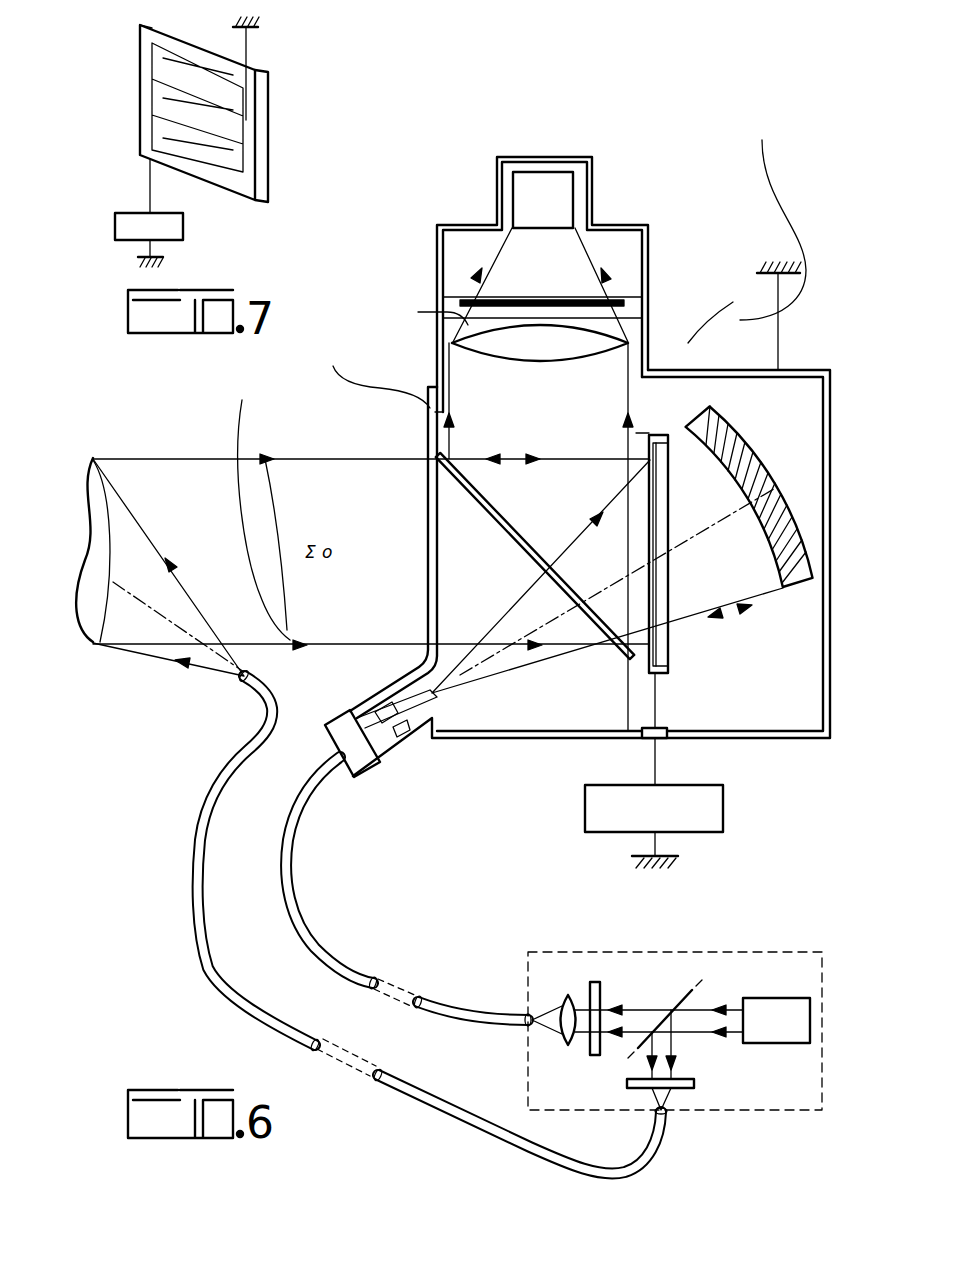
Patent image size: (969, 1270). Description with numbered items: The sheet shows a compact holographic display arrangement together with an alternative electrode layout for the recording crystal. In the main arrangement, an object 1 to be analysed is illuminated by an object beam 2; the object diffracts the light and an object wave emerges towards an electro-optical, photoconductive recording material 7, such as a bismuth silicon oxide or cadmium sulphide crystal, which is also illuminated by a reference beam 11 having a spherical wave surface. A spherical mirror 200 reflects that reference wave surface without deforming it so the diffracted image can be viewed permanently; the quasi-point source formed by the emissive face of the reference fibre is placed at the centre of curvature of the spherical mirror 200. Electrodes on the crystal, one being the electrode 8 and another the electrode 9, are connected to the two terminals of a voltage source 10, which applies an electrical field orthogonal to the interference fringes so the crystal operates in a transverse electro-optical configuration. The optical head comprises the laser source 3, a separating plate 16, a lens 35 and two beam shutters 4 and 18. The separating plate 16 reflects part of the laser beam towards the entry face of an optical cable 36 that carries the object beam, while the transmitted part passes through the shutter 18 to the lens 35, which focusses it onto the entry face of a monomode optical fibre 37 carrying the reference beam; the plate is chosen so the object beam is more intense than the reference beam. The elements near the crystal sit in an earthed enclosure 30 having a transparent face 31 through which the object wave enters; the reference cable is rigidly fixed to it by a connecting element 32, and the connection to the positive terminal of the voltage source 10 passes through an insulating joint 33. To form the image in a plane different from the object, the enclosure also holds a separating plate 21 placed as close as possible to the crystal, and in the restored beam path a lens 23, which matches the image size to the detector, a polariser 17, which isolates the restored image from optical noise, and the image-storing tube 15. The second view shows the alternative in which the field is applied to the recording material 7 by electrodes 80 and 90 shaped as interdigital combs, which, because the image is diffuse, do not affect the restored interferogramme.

In FIG. 6, the object 1 is at (93, 458).
In FIG. 6, the object beam 2 is at (142, 657).
In FIG. 6, the laser source 3 is at (765, 1005).
In FIG. 6, the beam shutter 4 is at (682, 1090).
In FIG. 7, the recording material 7 is at (250, 163).
In FIG. 6, the recording material 7 is at (667, 662).
In FIG. 6, the electrode 8 is at (563, 867).
In FIG. 6, the electrode 9 is at (663, 433).
In FIG. 7, the voltage source 10 is at (184, 229).
In FIG. 6, the voltage source 10 is at (698, 820).
In FIG. 6, the reference beam 11 is at (515, 680).
In FIG. 6, the image-storing tube 15 is at (555, 200).
In FIG. 6, the separating plate 16 is at (673, 1008).
In FIG. 6, the polariser 17 is at (636, 296).
In FIG. 6, the beam shutter 18 is at (608, 936).
In FIG. 6, the separating plate 21 is at (436, 447).
In FIG. 6, the lens 23 is at (600, 330).
In FIG. 6, the enclosure 30 is at (812, 368).
In FIG. 6, the transparent face 31 is at (290, 640).
In FIG. 6, the connecting element 32 is at (383, 778).
In FIG. 6, the insulating joint 33 is at (515, 820).
In FIG. 6, the lens 35 is at (560, 1034).
In FIG. 6, the optical cable 36 is at (432, 1100).
In FIG. 6, the monomode optical fibre 37 is at (288, 866).
In FIG. 7, the electrode 80 is at (150, 130).
In FIG. 7, the electrode 90 is at (247, 118).
In FIG. 6, the spherical mirror 200 is at (712, 410).